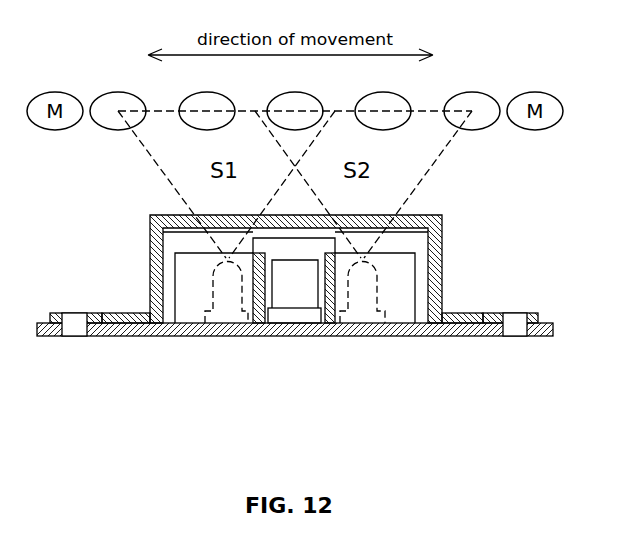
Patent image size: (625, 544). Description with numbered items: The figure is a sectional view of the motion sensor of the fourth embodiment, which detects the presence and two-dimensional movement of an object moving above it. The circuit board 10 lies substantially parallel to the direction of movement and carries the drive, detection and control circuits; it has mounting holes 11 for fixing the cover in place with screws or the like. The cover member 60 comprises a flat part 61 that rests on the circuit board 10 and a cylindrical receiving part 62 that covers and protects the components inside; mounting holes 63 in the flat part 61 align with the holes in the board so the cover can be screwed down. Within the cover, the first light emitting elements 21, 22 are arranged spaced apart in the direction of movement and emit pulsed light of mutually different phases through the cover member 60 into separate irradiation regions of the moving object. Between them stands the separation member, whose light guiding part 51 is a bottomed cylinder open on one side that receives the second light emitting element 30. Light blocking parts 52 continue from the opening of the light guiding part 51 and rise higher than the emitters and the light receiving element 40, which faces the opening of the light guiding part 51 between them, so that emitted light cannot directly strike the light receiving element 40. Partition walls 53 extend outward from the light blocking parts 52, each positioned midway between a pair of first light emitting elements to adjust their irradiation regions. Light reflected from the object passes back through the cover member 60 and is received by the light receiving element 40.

The circuit board 10 is at (112, 338).
The mounting hole 11 is at (72, 330).
The first light emitting element 21 is at (218, 279).
The first light emitting element 22 is at (367, 278).
The second light emitting element 30 is at (300, 297).
The light receiving element 40 is at (282, 317).
The light guiding part 51 is at (293, 243).
The light blocking part 52 is at (148, 233).
The partition wall 53 is at (183, 270).
The cover member 60 is at (451, 196).
The flat part 61 is at (132, 316).
The cylindrical receiving part 62 is at (441, 286).
The mounting hole 63 is at (66, 315).